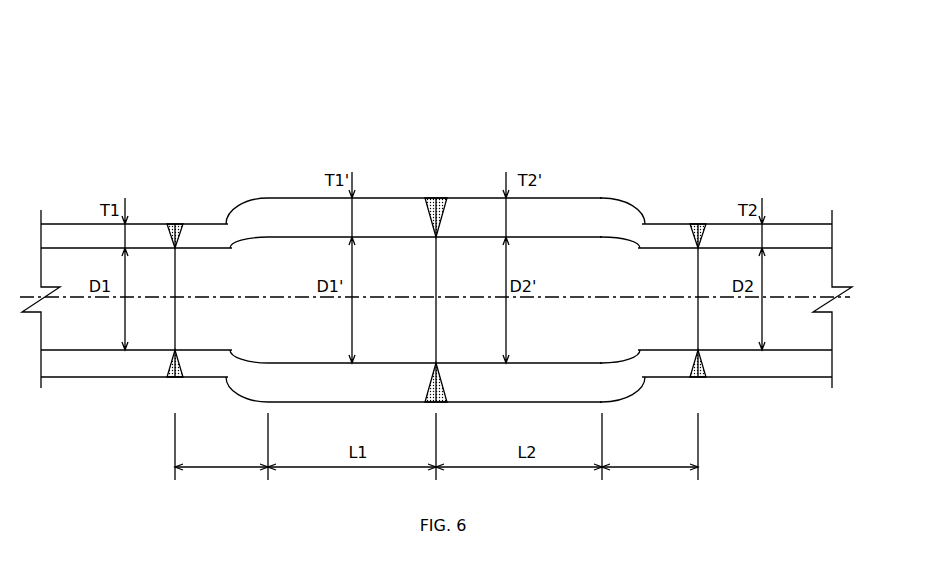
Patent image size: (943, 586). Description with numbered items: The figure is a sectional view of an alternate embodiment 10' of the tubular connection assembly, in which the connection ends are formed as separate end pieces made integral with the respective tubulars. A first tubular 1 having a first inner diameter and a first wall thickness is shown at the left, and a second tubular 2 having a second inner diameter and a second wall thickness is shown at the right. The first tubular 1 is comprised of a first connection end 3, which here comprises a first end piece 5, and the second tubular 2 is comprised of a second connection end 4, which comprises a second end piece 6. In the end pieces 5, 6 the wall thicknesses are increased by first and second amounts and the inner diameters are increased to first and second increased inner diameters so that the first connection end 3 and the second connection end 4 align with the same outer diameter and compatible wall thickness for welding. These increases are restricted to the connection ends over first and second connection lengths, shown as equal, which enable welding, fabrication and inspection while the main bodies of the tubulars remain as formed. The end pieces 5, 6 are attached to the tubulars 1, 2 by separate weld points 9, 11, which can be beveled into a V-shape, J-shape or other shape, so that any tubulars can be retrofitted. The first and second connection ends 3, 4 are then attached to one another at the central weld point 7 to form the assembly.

The first tubular 1 is at (80, 214).
The second tubular 2 is at (785, 214).
The first connection end 3 is at (303, 188).
The second connection end 4 is at (573, 188).
The first end piece 5 is at (214, 214).
The second end piece 6 is at (659, 214).
The weld point 7 is at (439, 188).
The weld point 9 is at (179, 214).
The alternate embodiment 10' is at (435, 157).
The weld point 11 is at (701, 214).